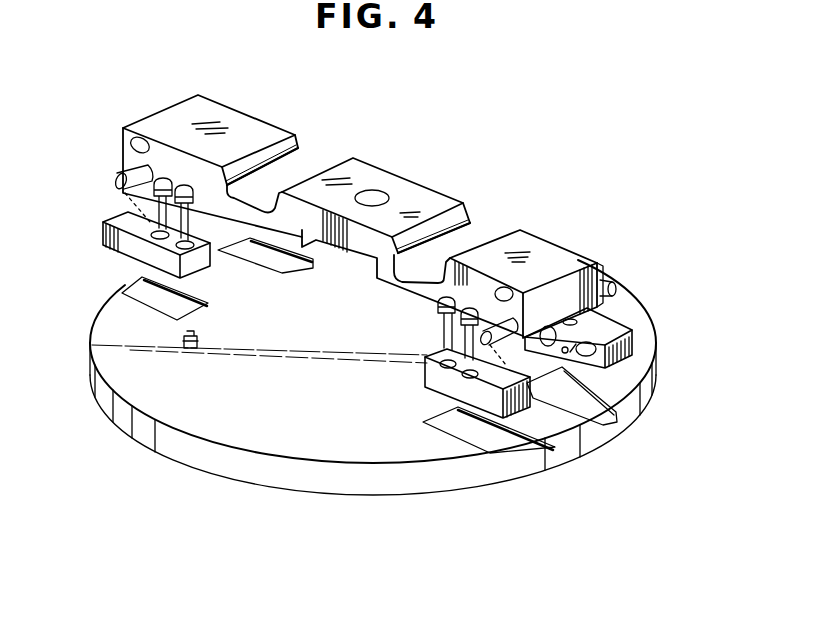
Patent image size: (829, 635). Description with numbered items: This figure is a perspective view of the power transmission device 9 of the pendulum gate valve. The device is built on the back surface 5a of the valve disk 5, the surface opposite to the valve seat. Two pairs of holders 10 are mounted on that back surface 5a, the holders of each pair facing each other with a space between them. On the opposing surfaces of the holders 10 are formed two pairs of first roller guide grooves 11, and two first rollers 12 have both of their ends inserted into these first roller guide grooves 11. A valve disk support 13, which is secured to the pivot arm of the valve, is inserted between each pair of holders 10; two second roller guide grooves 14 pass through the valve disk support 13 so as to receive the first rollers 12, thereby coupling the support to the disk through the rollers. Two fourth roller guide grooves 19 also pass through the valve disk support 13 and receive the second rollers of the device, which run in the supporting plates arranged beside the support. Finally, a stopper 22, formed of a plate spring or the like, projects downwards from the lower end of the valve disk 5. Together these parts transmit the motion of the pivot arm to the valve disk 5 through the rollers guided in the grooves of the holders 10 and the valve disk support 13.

The valve disk 5 is at (333, 493).
The back surface 5a is at (222, 425).
The power transmission device 9 is at (515, 203).
The holders 10 is at (122, 245).
The first roller guide grooves 11 is at (592, 353).
The first rollers 12 is at (128, 168).
The valve disk support 13 is at (552, 257).
The second roller guide grooves 14 is at (497, 338).
The fourth roller guide grooves 19 is at (134, 140).
The stopper 22 is at (573, 428).